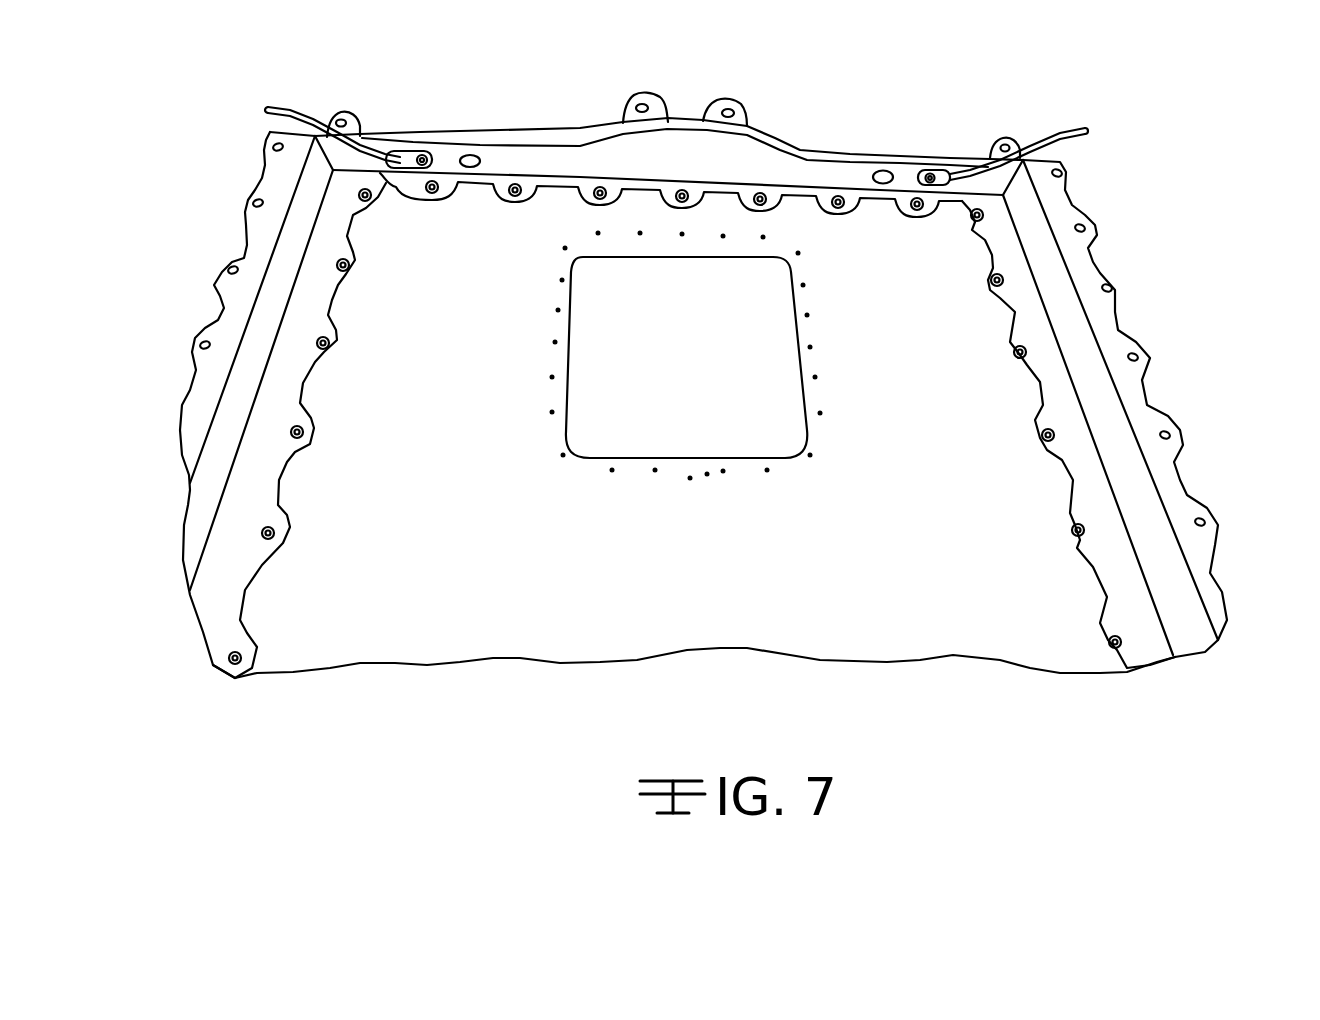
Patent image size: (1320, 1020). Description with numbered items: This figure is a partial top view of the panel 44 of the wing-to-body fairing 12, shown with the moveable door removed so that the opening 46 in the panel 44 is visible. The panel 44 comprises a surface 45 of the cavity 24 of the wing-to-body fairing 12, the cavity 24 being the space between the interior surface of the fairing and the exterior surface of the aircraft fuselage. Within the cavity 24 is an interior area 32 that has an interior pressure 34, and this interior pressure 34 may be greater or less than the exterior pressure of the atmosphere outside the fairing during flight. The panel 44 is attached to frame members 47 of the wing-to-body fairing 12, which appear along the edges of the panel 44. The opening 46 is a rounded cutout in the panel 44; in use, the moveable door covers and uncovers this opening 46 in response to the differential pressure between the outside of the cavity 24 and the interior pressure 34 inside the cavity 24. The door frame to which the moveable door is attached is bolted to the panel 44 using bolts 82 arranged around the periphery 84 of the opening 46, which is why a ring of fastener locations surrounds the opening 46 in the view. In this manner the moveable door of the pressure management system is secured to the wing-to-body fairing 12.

The wing-to-body fairing 12 is at (567, 663).
The cavity 24 is at (357, 607).
The interior area 32 is at (398, 635).
The interior pressure 34 is at (278, 640).
The panel 44 is at (1023, 623).
The surface 45 is at (967, 658).
The opening 46 is at (668, 458).
The frame members 47 is at (912, 177).
The bolts 82 is at (550, 413).
The periphery 84 is at (550, 358).